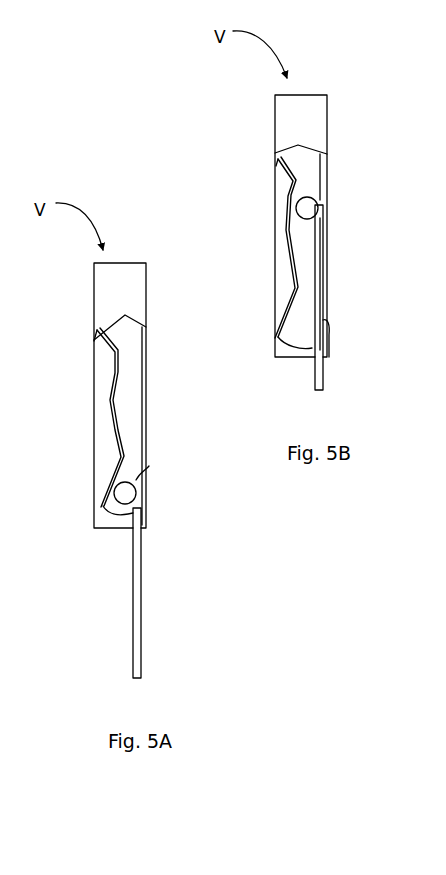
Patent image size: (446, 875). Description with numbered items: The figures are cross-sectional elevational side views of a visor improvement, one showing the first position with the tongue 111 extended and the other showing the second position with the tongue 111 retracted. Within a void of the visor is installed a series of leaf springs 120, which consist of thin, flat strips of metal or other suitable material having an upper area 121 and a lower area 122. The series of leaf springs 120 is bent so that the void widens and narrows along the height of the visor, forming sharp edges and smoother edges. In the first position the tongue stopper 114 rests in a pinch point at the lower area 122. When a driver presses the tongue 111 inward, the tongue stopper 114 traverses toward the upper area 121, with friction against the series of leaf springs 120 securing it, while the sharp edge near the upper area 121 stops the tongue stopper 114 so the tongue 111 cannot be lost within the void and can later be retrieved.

In FIG. 5A, the tongue 111 is at (141, 598).
In FIG. 5B, the tongue 111 is at (323, 372).
In FIG. 5A, the tongue stopper 114 is at (133, 487).
In FIG. 5B, the tongue stopper 114 is at (313, 213).
In FIG. 5A, the series of leaf springs 120 is at (115, 398).
In FIG. 5B, the series of leaf springs 120 is at (292, 240).
In FIG. 5A, the upper area 121 is at (95, 342).
In FIG. 5B, the upper area 121 is at (279, 160).
In FIG. 5A, the lower area 122 is at (103, 506).
In FIG. 5B, the lower area 122 is at (278, 337).